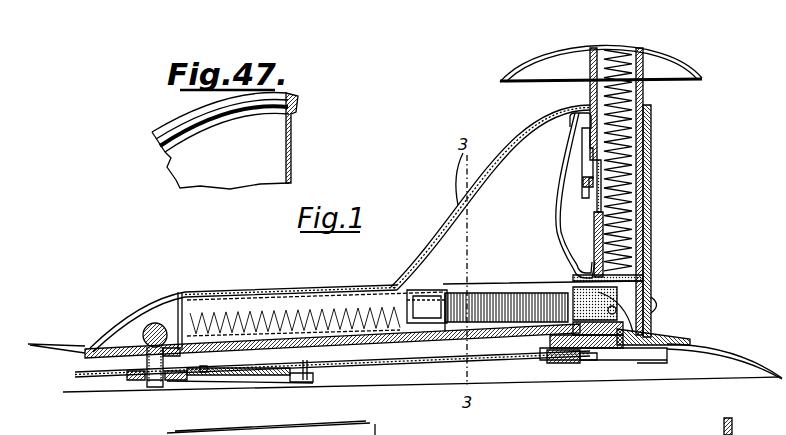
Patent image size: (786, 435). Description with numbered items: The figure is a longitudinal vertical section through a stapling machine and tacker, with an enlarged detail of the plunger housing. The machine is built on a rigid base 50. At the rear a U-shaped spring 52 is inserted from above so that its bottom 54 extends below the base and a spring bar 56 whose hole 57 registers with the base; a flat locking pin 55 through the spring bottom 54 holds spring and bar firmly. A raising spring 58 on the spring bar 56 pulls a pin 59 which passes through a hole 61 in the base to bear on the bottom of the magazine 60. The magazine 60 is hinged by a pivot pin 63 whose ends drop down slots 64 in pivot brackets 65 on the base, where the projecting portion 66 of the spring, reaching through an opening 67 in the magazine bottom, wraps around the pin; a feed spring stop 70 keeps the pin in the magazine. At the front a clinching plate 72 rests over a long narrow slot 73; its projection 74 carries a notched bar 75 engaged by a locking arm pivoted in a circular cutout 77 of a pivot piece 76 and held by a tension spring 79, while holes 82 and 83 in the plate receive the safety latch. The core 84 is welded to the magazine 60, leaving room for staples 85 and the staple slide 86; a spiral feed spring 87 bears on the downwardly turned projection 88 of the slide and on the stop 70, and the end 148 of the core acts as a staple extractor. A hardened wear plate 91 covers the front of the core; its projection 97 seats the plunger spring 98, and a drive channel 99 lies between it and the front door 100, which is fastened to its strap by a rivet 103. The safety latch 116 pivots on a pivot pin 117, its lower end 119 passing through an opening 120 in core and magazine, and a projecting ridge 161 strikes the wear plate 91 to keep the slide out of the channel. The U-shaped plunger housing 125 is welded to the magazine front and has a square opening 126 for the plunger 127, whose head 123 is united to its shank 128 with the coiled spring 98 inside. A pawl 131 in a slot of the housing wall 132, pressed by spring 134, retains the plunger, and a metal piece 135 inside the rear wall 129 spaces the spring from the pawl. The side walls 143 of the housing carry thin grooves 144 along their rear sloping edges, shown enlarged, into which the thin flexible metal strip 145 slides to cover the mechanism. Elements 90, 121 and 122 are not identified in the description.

In FIG. 1, the base 50 is at (63, 392).
In FIG. 1, the U-shaped spring 52 is at (77, 372).
In FIG. 1, the bottom of the U-shaped spring 54 is at (155, 386).
In FIG. 1, the flat locking pin 55 is at (172, 380).
In FIG. 1, the spring bar 56 is at (133, 373).
In FIG. 1, the hole 57 is at (140, 378).
In FIG. 1, the raising spring 58 is at (190, 375).
In FIG. 1, the pin 59 is at (240, 375).
In FIG. 1, the magazine 60 is at (87, 357).
In FIG. 1, the hole 61 is at (307, 380).
In FIG. 1, the pivot pin 63 is at (162, 318).
In FIG. 1, the slots 64 is at (143, 320).
In FIG. 1, the pivot brackets 65 is at (335, 370).
In FIG. 1, the projecting portion 66 is at (143, 332).
In FIG. 1, the opening 67 is at (205, 374).
In FIG. 1, the feed spring stop 70 is at (187, 317).
In FIG. 1, the clinching plate 72 is at (690, 340).
In FIG. 1, the slot 73 is at (690, 352).
In FIG. 1, the metal projection 74 is at (640, 350).
In FIG. 1, the notched bar 75 is at (665, 360).
In FIG. 1, the pivot piece 76 is at (560, 353).
In FIG. 1, the circular cutout 77 is at (578, 357).
In FIG. 1, the tension spring 79 is at (590, 360).
In FIG. 1, the hole 82 is at (627, 335).
In FIG. 1, the hole 83 is at (605, 352).
In FIG. 1, the core 84 is at (447, 343).
In FIG. 1, the staples 85 is at (447, 285).
In FIG. 1, the staple slide 86 is at (407, 290).
In FIG. 1, the feed spring 87 is at (232, 310).
In FIG. 1, the downwardly turned projection 88 is at (368, 284).
In FIG. 1, the guide 90 is at (430, 287).
In FIG. 1, the wear plate 91 is at (583, 279).
In FIG. 1, the projection 97 is at (645, 272).
In FIG. 1, the plunger spring 98 is at (606, 55).
In FIG. 1, the drive channel 99 is at (648, 283).
In FIG. 1, the front door 100 is at (651, 316).
In FIG. 1, the rivet 103 is at (650, 296).
In FIG. 1, the safety latch 116 is at (615, 345).
In FIG. 1, the pivot pin 117 is at (535, 342).
In FIG. 1, the lower end of the safety latch 119 is at (630, 365).
In FIG. 1, the opening 120 is at (655, 322).
In FIG. 1, the bracket 121 is at (755, 434).
In FIG. 1, the inner wall 122 is at (653, 218).
In FIG. 1, the plunger head 123 is at (633, 48).
In FIG. 1, the plunger housing 125 is at (651, 165).
In FIG. 1, the opening 126 is at (647, 100).
In FIG. 1, the plunger 127 is at (645, 89).
In FIG. 1, the plunger shank 128 is at (645, 72).
In FIG. 1, the rear wall 129 is at (603, 94).
In FIG. 1, the pawl 131 is at (584, 150).
In FIG. 1, the wall 132 is at (572, 220).
In FIG. 1, the spring 134 is at (566, 179).
In FIG. 1, the metal piece 135 is at (602, 83).
In FIG. 47, the side walls 143 is at (176, 182).
In FIG. 1, the side walls 143 is at (452, 222).
In FIG. 47, the grooves 144 is at (167, 147).
In FIG. 1, the grooves 144 is at (510, 138).
In FIG. 1, the thin flexible metal strip 145 is at (486, 192).
In FIG. 1, the end of the core 148 is at (67, 343).
In FIG. 1, the projecting ridge 161 is at (420, 288).